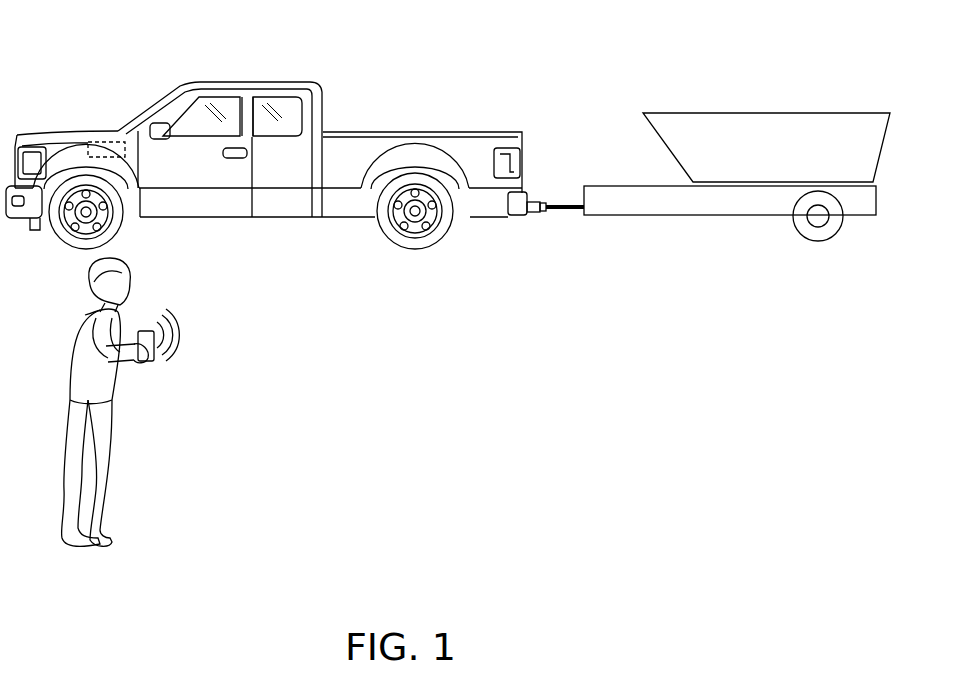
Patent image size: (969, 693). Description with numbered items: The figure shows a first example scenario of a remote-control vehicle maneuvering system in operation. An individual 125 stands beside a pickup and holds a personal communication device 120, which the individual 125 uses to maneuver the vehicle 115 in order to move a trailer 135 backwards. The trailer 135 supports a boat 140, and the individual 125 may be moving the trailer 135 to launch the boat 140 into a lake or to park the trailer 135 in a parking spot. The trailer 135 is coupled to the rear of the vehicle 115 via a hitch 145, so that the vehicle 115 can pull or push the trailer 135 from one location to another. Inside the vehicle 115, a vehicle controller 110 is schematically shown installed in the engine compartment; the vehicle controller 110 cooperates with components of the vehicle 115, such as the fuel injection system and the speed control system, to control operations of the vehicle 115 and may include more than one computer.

The vehicle controller 110 is at (100, 140).
The vehicle 115 is at (86, 55).
The personal communication device 120 is at (152, 356).
The individual 125 is at (48, 331).
The trailer 135 is at (623, 161).
The boat 140 is at (730, 112).
The hitch 145 is at (567, 229).